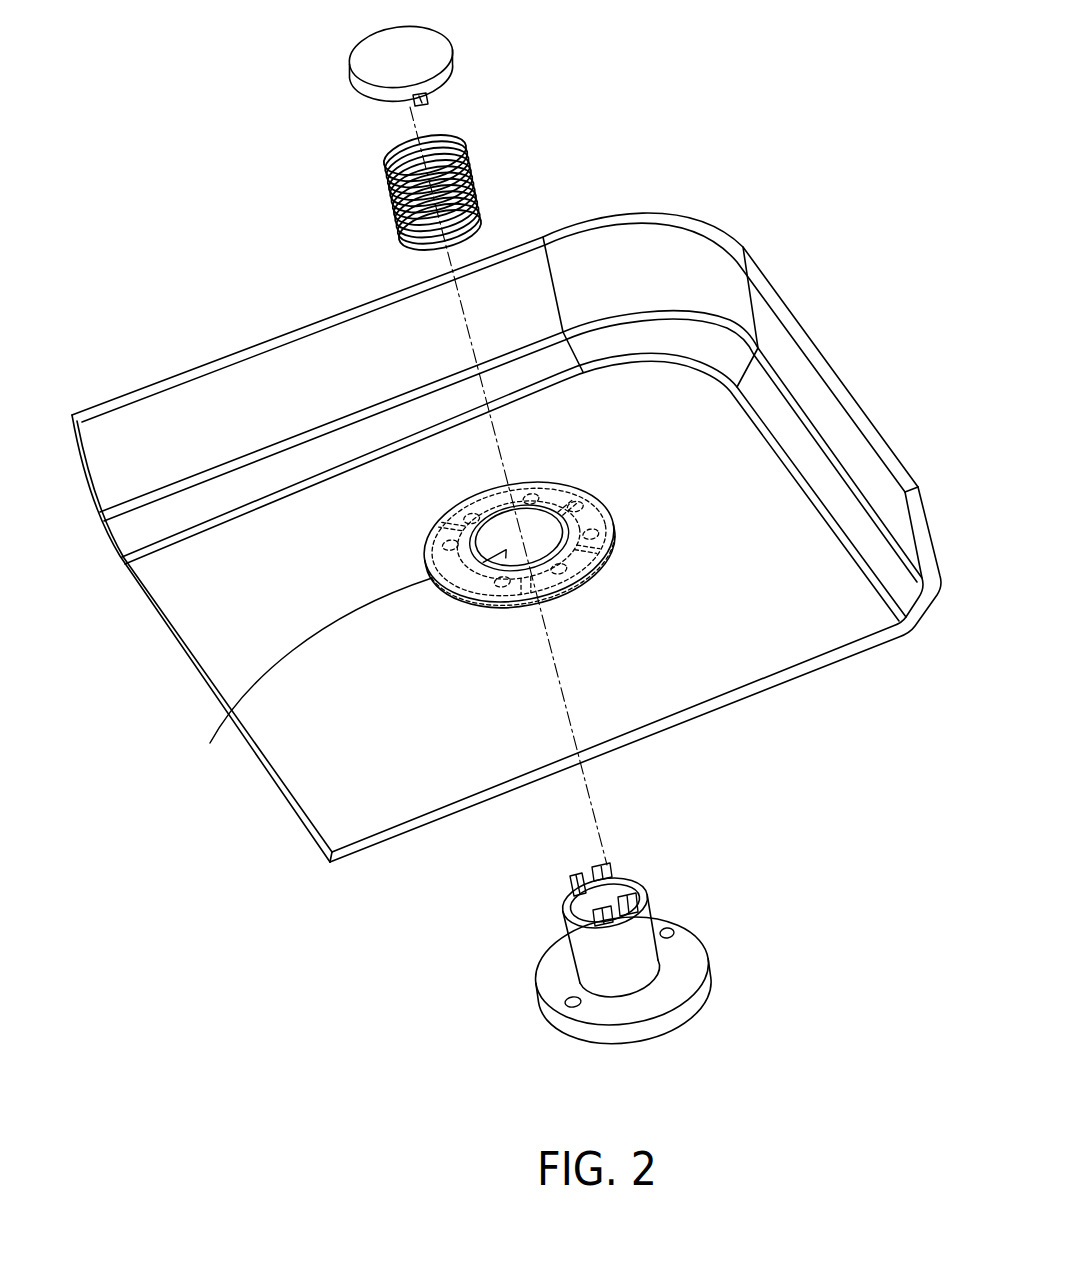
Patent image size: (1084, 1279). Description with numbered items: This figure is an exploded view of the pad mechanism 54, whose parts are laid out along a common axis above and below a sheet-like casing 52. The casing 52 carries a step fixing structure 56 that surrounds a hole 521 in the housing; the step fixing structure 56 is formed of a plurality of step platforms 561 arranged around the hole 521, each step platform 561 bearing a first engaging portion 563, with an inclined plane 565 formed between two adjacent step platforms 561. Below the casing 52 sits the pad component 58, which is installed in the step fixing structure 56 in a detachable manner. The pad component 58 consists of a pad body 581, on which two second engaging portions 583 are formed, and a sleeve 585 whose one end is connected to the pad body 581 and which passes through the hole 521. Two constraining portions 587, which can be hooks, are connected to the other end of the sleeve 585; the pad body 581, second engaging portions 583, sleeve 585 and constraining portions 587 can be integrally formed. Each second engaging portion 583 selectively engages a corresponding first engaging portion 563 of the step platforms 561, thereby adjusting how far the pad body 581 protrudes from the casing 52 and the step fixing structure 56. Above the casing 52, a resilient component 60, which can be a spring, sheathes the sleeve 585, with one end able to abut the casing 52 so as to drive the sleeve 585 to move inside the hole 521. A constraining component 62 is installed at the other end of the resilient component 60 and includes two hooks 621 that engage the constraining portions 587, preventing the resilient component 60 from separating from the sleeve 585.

The casing 52 is at (734, 245).
The hole 521 is at (305, 676).
The pad mechanism 54 is at (560, 90).
The step fixing structure 56 is at (635, 638).
The step platforms 561 is at (553, 575).
The first engaging portion 563 is at (587, 585).
The inclined plane 565 is at (540, 578).
The pad component 58 is at (645, 940).
The pad body 581 is at (702, 977).
The second engaging portion 583 is at (676, 935).
The sleeve 585 is at (647, 915).
The constraining portion 587 is at (652, 884).
The resilient component 60 is at (468, 166).
The constraining component 62 is at (442, 61).
The hook 621 is at (430, 99).